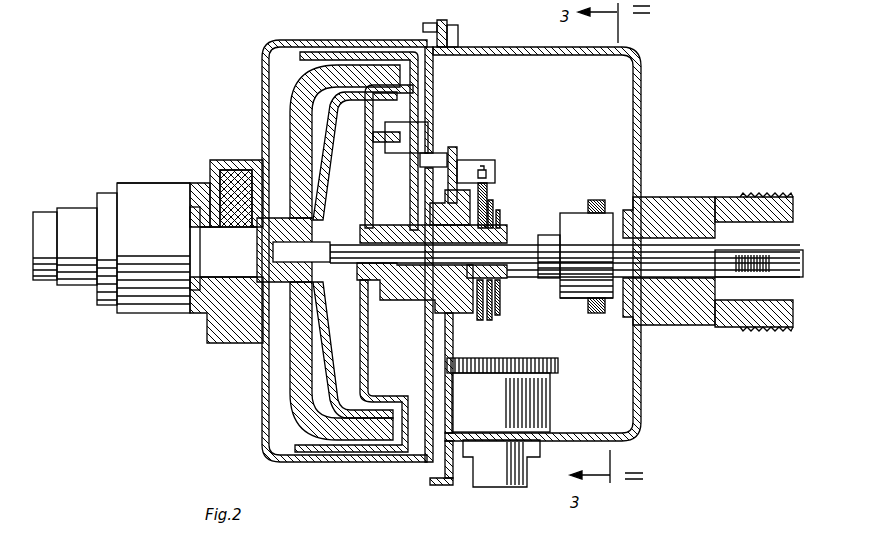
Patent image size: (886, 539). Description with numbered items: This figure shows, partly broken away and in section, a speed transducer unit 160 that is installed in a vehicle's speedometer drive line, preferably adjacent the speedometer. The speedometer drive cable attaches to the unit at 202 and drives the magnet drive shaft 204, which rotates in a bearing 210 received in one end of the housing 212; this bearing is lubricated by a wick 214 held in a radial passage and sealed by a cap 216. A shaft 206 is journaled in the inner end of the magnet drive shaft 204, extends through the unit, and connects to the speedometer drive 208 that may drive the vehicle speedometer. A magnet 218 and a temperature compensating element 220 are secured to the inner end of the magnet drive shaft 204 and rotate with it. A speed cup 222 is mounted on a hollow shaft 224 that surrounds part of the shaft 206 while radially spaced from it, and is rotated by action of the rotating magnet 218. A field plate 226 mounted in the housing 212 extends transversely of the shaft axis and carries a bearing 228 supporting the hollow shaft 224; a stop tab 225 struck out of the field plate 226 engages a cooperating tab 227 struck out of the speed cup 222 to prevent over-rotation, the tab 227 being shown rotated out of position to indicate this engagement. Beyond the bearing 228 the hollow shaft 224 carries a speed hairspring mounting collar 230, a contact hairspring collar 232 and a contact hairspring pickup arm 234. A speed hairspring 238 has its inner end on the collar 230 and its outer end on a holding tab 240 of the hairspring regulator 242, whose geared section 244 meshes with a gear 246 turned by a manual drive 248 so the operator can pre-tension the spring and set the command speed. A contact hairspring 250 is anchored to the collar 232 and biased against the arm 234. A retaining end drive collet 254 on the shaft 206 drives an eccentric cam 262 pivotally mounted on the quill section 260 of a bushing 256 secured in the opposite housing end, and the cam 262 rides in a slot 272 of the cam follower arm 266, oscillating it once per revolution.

The speed transducer unit 160 is at (641, 87).
The speedometer drive cable attachment 202 is at (196, 228).
The magnet drive shaft 204 is at (192, 316).
The shaft 206 is at (327, 282).
The speedometer drive 208 is at (718, 247).
The bearing 210 is at (197, 183).
The housing 212 is at (262, 97).
The wick 214 is at (208, 172).
The cap 216 is at (245, 170).
The magnet 218 is at (297, 92).
The temperature compensating element 220 is at (322, 180).
The speed cup 222 is at (380, 52).
The hollow shaft 224 is at (382, 290).
The stop tab 225 is at (405, 150).
The field plate 226 is at (433, 78).
The cooperating tab 227 is at (376, 150).
The bearing 228 is at (403, 225).
The speed hairspring mounting collar 230 is at (478, 292).
The contact hairspring collar 232 is at (503, 280).
The contact hairspring pickup arm 234 is at (492, 200).
The speed hairspring 238 is at (489, 316).
The speed hairspring holding tab 240 is at (476, 160).
The hairspring regulator 242 is at (452, 147).
The geared section 244 is at (445, 355).
The gear 246 is at (557, 370).
The manual drive 248 is at (475, 467).
The contact hairspring 250 is at (500, 310).
The retaining end drive collet 254 is at (547, 235).
The bushing 256 is at (685, 197).
The quill section 260 is at (610, 190).
The eccentric cam 262 is at (578, 213).
The cam follower arm 266 is at (595, 313).
The slot 272 is at (582, 298).